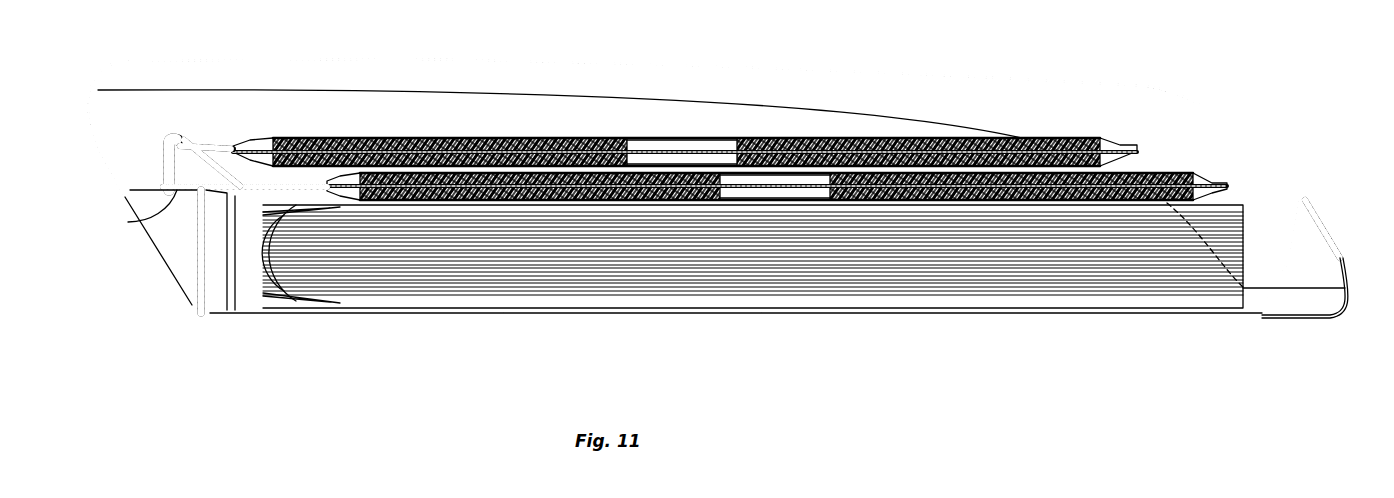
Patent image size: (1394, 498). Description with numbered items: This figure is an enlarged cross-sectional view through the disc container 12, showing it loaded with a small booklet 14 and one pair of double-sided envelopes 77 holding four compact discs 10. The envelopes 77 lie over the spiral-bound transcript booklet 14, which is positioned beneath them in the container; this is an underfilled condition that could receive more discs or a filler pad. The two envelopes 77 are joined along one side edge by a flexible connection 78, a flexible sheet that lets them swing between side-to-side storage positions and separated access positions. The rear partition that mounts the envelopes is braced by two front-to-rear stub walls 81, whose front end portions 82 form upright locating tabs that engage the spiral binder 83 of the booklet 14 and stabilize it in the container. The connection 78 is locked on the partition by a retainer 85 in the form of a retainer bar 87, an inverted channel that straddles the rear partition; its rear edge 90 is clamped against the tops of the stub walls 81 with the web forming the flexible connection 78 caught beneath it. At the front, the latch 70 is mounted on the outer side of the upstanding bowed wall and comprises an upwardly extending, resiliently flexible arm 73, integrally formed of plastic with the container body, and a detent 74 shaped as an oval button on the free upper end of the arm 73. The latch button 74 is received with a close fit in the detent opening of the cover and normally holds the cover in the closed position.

The compact disc 10 is at (1098, 137).
The disc container 12 is at (210, 344).
The booklet 14 is at (447, 288).
The latch 70 is at (1333, 197).
The resiliently flexible arm 73 is at (1280, 292).
The detent 74 is at (1330, 227).
The envelope 77 is at (585, 138).
The flexible connection 78 is at (160, 172).
The stub wall 81 is at (178, 258).
The front end portion 82 is at (218, 304).
The spiral binder 83 is at (190, 305).
The retainer 85 is at (193, 140).
The retainer bar 87 is at (163, 155).
The rear edge 90 is at (132, 224).